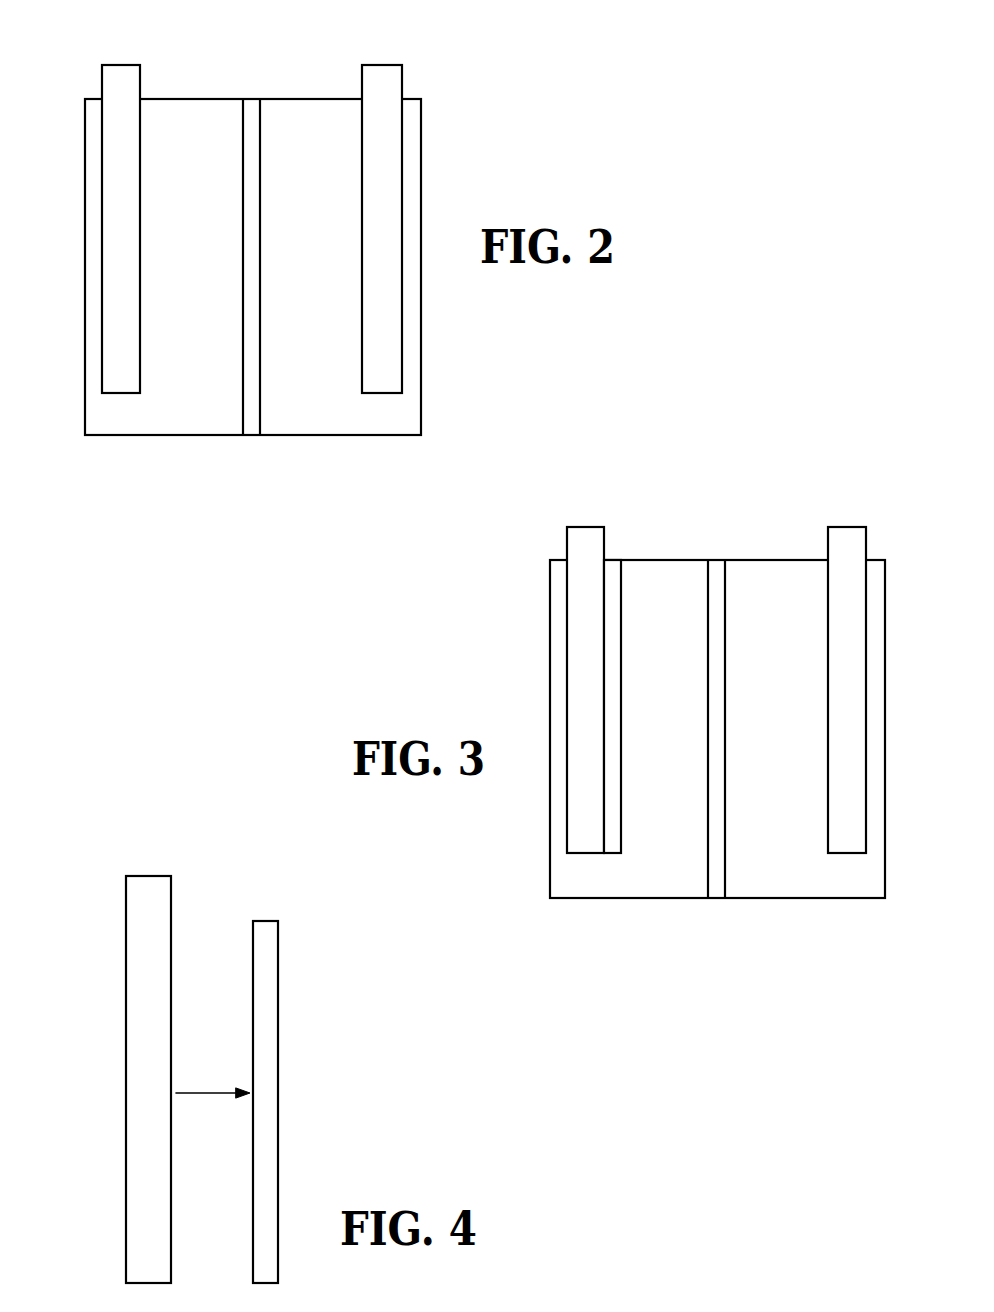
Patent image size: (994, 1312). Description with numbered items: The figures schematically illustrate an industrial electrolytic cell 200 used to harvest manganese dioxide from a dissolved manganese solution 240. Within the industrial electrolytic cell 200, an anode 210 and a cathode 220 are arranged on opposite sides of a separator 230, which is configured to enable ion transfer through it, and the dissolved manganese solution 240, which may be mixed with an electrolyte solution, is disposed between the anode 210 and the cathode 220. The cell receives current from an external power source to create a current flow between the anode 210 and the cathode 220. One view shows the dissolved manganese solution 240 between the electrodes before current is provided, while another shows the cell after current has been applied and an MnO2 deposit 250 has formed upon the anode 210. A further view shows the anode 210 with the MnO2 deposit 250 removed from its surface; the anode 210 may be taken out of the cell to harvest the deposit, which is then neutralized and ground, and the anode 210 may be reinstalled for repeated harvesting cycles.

In FIG. 2, the industrial electrolytic cell 200 is at (205, 98).
In FIG. 3, the industrial electrolytic cell 200 is at (672, 559).
In FIG. 2, the anode 210 is at (117, 242).
In FIG. 3, the anode 210 is at (585, 702).
In FIG. 4, the anode 210 is at (137, 1015).
In FIG. 2, the cathode 220 is at (388, 173).
In FIG. 3, the cathode 220 is at (857, 547).
In FIG. 2, the separator 230 is at (255, 142).
In FIG. 3, the separator 230 is at (722, 602).
In FIG. 2, the dissolved manganese solution 240 is at (281, 423).
In FIG. 3, the dissolved manganese solution 240 is at (748, 883).
In FIG. 3, the MnO2 deposit 250 is at (613, 653).
In FIG. 4, the MnO2 deposit 250 is at (265, 1055).